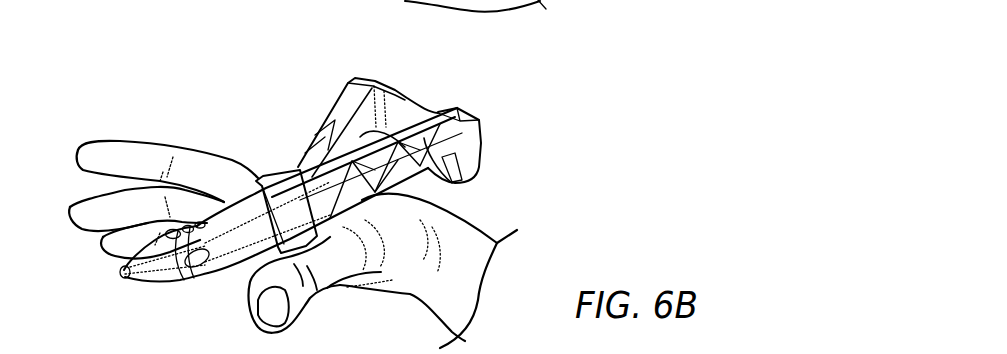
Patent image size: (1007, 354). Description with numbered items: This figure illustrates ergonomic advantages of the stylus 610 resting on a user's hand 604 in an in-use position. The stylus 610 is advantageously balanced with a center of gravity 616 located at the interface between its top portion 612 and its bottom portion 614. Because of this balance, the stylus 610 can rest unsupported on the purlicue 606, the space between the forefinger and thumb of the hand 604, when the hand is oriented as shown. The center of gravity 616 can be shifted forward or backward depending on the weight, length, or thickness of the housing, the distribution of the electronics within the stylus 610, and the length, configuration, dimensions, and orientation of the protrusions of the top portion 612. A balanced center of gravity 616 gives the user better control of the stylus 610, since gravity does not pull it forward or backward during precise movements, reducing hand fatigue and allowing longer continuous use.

The index finger 604 is at (133, 157).
The purlicue 606 is at (330, 236).
The stylus 610 is at (472, 113).
The top portion 612 is at (130, 293).
The bottom portion 614 is at (413, 62).
The center of gravity 616 is at (265, 176).